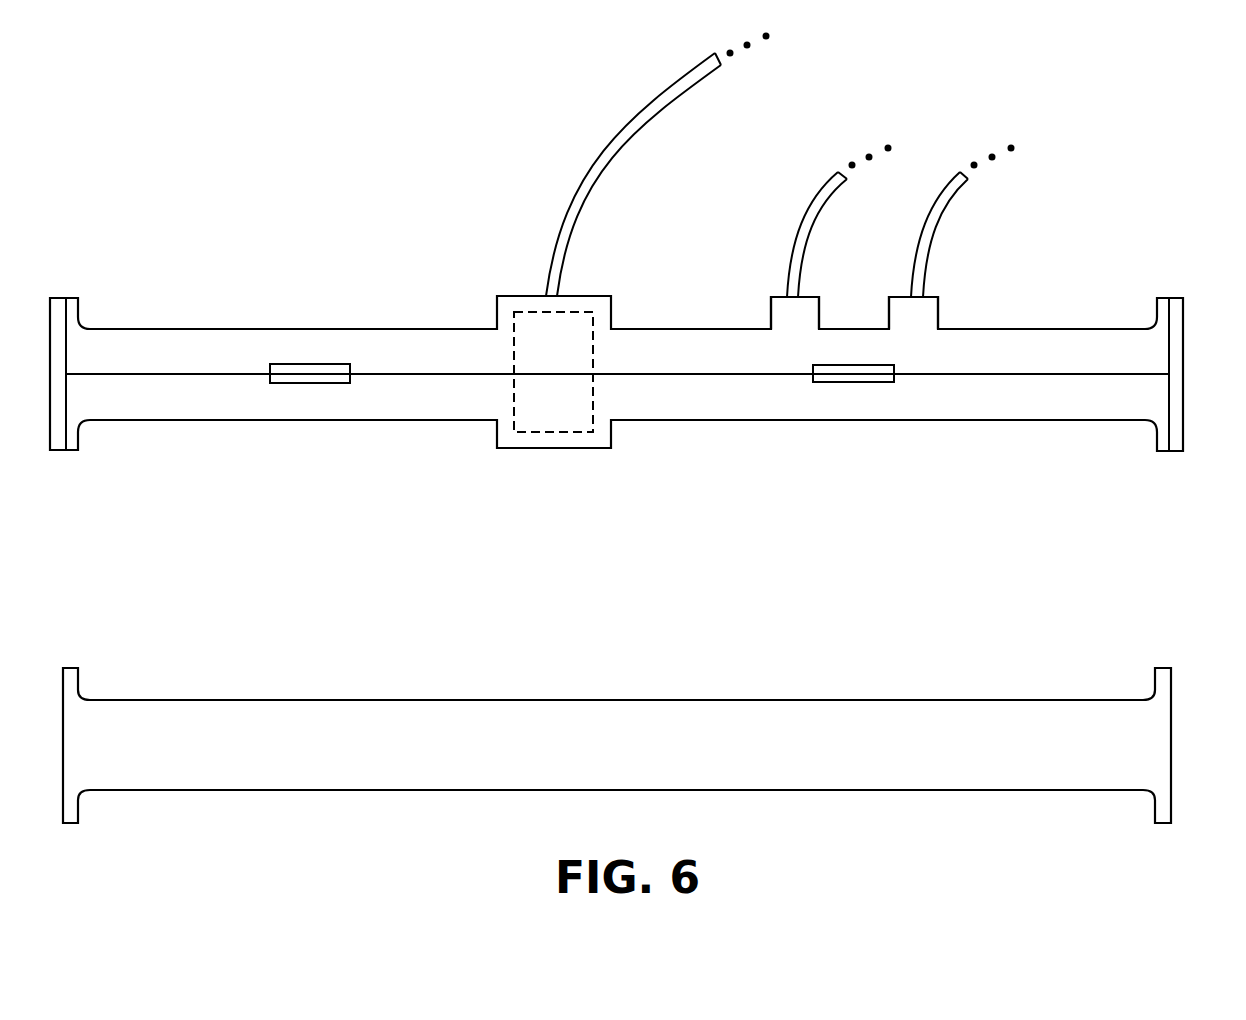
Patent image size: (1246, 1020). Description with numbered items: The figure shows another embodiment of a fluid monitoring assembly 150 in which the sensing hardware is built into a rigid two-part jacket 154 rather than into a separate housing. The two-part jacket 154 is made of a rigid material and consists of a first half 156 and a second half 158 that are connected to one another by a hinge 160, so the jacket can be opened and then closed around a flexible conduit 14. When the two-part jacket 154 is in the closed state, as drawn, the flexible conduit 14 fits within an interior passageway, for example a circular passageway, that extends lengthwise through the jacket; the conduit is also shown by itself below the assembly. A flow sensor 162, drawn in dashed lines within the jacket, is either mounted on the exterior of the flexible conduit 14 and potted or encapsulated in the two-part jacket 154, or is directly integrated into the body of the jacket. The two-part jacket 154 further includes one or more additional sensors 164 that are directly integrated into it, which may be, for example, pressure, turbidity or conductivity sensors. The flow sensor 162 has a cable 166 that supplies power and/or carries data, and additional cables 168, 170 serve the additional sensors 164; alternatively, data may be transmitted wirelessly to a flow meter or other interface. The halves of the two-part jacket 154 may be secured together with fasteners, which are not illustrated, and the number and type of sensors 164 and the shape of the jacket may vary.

The flexible conduit 14 is at (790, 767).
The fluid monitoring assembly 150 is at (616, 301).
The two-part jacket 154 is at (258, 442).
The first half 156 is at (419, 330).
The second half 158 is at (407, 405).
The hinge 160 is at (325, 381).
The flow sensor 162 is at (527, 423).
The additional sensors 164 is at (771, 297).
The cable 166 is at (603, 138).
The additional cable 168 is at (813, 230).
The additional cable 170 is at (957, 192).